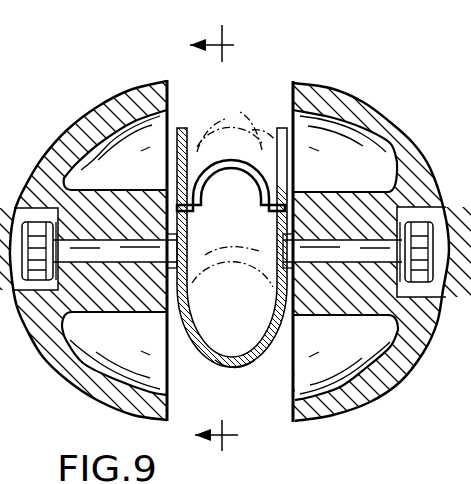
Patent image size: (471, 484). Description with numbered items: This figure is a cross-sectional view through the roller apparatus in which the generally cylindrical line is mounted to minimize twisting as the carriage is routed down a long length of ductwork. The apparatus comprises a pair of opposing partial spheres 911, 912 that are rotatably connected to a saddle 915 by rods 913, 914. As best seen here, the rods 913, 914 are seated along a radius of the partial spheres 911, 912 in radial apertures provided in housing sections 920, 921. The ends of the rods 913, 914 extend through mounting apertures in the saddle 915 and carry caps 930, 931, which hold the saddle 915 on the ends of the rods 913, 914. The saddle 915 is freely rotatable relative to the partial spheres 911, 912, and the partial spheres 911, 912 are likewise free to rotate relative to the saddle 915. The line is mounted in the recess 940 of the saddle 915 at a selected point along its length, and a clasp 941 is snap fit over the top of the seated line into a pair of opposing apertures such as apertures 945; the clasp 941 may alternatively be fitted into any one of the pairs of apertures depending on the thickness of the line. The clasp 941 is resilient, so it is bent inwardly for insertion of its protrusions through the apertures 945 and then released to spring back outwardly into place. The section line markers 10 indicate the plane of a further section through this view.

The section line 10- 10 is at (231, 238).
The partial sphere 911 is at (108, 100).
The partial sphere 912 is at (385, 378).
The rod 913 is at (113, 200).
The rod 914 is at (328, 210).
The saddle 915 is at (268, 362).
The housing section 920 is at (103, 300).
The housing section 921 is at (318, 303).
The cap 930 is at (206, 213).
The cap 931 is at (268, 247).
The recess 940 is at (220, 352).
The clasp 941 is at (252, 133).
The aperture 945 is at (210, 142).